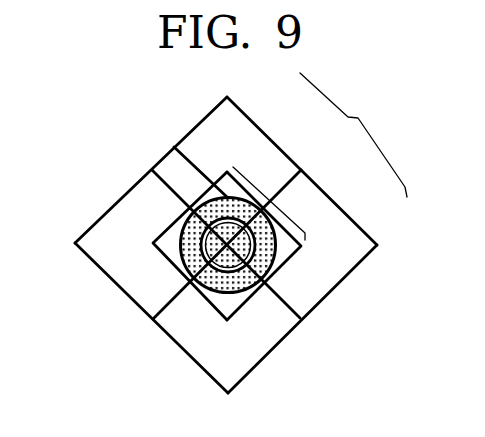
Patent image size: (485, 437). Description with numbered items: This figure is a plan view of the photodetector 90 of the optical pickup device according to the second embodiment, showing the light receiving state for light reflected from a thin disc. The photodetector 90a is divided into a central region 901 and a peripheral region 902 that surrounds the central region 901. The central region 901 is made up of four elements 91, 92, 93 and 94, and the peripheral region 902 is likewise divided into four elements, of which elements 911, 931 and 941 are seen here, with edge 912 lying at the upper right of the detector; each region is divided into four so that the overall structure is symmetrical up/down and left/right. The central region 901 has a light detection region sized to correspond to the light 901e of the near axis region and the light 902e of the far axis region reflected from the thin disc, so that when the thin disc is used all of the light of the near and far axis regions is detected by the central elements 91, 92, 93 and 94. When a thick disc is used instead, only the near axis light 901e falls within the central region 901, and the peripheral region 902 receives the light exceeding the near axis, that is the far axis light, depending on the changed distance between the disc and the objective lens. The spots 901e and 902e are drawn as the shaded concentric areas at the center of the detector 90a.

The photodetector 90 is at (333, 283).
The photodetector 90a is at (352, 306).
The element 91 is at (172, 150).
The element 911 is at (237, 152).
The side edge of first plate 912 is at (323, 220).
The element 92 is at (276, 247).
The element 93 is at (230, 310).
The element 931 is at (280, 328).
The element 94 is at (207, 245).
The element 941 is at (127, 213).
The central region 901 is at (281, 192).
The light of the near axis region 901e is at (165, 253).
The peripheral region 902 is at (353, 135).
The light of the far axis region 902e is at (200, 283).